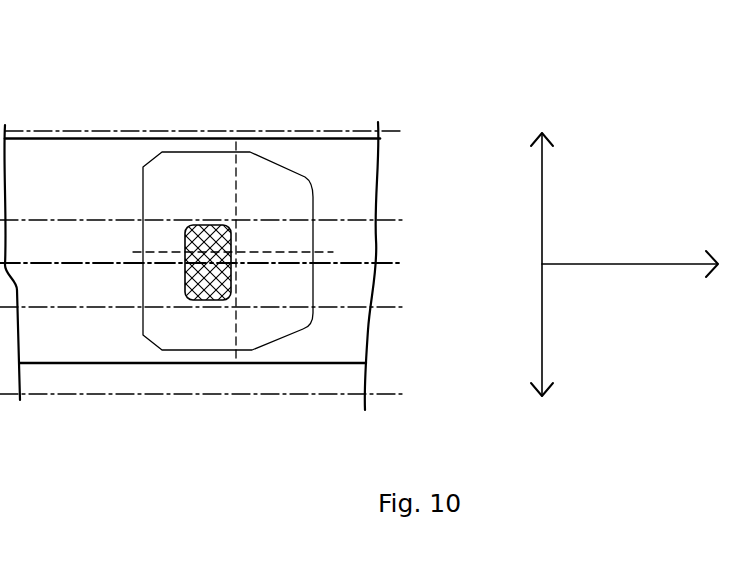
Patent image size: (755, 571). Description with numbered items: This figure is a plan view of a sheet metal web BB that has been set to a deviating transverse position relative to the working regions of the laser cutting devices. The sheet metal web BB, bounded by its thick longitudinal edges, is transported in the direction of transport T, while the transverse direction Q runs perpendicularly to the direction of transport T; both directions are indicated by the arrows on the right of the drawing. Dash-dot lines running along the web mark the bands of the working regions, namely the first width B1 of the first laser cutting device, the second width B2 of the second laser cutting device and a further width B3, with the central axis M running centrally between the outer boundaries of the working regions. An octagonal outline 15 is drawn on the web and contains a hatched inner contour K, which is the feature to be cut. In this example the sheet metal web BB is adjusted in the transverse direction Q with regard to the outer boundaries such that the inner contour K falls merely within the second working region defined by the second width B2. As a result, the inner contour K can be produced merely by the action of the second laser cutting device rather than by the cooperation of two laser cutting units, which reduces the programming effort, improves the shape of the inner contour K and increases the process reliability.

The bearing element / pad 15 is at (262, 183).
The inner contour K is at (195, 290).
The central axis M is at (390, 262).
The sheet metal web BB is at (0, 107).
The first width B1 is at (229, 370).
The second width B2 is at (240, 277).
The third band region B3 is at (229, 175).
The transverse direction Q is at (542, 236).
The direction of transport T is at (630, 250).